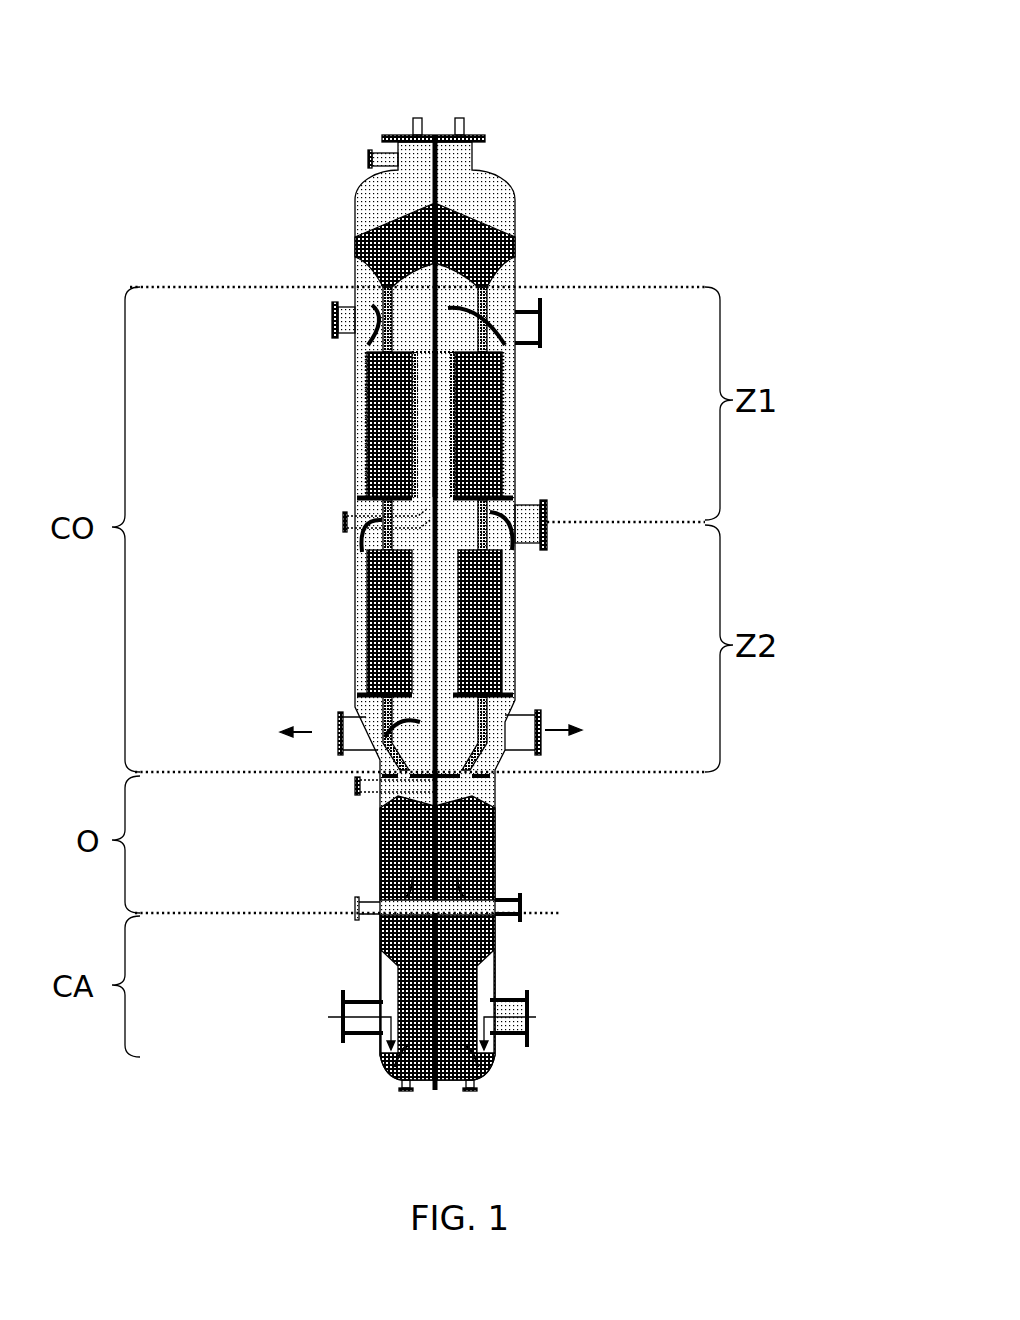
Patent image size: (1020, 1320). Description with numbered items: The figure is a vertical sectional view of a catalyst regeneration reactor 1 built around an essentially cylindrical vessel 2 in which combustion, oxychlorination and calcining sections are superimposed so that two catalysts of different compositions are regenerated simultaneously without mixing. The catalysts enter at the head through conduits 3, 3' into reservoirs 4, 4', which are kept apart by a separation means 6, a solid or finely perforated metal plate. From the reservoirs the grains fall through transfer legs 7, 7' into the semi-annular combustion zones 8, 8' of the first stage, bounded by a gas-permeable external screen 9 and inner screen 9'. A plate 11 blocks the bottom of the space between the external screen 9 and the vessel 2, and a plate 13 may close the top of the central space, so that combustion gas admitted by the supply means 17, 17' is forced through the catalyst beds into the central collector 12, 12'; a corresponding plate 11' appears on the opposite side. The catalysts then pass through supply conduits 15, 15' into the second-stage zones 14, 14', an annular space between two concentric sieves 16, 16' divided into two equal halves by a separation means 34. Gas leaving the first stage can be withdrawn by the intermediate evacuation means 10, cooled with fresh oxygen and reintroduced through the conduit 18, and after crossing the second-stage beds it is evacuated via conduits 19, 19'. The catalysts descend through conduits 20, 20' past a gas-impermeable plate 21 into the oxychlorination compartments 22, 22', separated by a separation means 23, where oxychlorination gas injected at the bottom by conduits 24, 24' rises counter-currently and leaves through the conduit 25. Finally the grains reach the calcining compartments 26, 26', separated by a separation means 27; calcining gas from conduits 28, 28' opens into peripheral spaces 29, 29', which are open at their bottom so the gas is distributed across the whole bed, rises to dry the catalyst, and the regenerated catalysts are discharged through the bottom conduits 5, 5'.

The catalyst regeneration reactor 1 is at (603, 94).
The vessel 2 is at (516, 273).
The conduit 3 is at (393, 92).
The conduit 3' is at (493, 92).
The reservoir 4 is at (353, 233).
The reservoir 4' is at (516, 232).
The conduit 5 is at (364, 1094).
The conduit 5' is at (505, 1094).
The separation means 6 is at (438, 192).
The transfer leg 7 is at (342, 300).
The transfer leg 7' is at (533, 300).
The combustion zone 8 is at (331, 425).
The combustion zone 8' is at (518, 425).
The external screen 9 is at (537, 417).
The inner screen 9' is at (332, 424).
The intermediate evacuation means 10 is at (579, 513).
The plate 11 is at (323, 507).
The connecting tube 11' is at (533, 505).
The central collector 12 is at (352, 424).
The central collector 12' is at (541, 424).
The plate 13 is at (425, 355).
The combustion zone 14 is at (337, 622).
The combustion zone 14' is at (527, 622).
The supply conduit 15 is at (330, 519).
The supply conduit 15' is at (559, 552).
The sieve 16 is at (352, 670).
The sieve 16' is at (545, 703).
The means for supplying combustion gas 17 is at (297, 311).
The means for supplying combustion gas 17' is at (571, 324).
The conduit 18 is at (345, 522).
The conduit 19 is at (302, 747).
The conduit 19' is at (585, 743).
The conduit 20 is at (352, 722).
The conduit 20' is at (566, 721).
The plate 21 is at (468, 778).
The oxychlorination compartment 22 is at (370, 848).
The oxychlorination compartment 22' is at (502, 848).
The separation means 23 is at (438, 858).
The conduit 24 is at (326, 898).
The conduit 24' is at (549, 902).
The conduit 25 is at (360, 790).
The calcining compartment 26 is at (364, 997).
The calcining compartment 26' is at (501, 997).
The separation means 27 is at (442, 985).
The conduit 28 is at (328, 1025).
The conduit 28' is at (545, 1035).
The space 29 is at (346, 1001).
The space 29' is at (551, 1001).
The separation means 34 is at (437, 425).